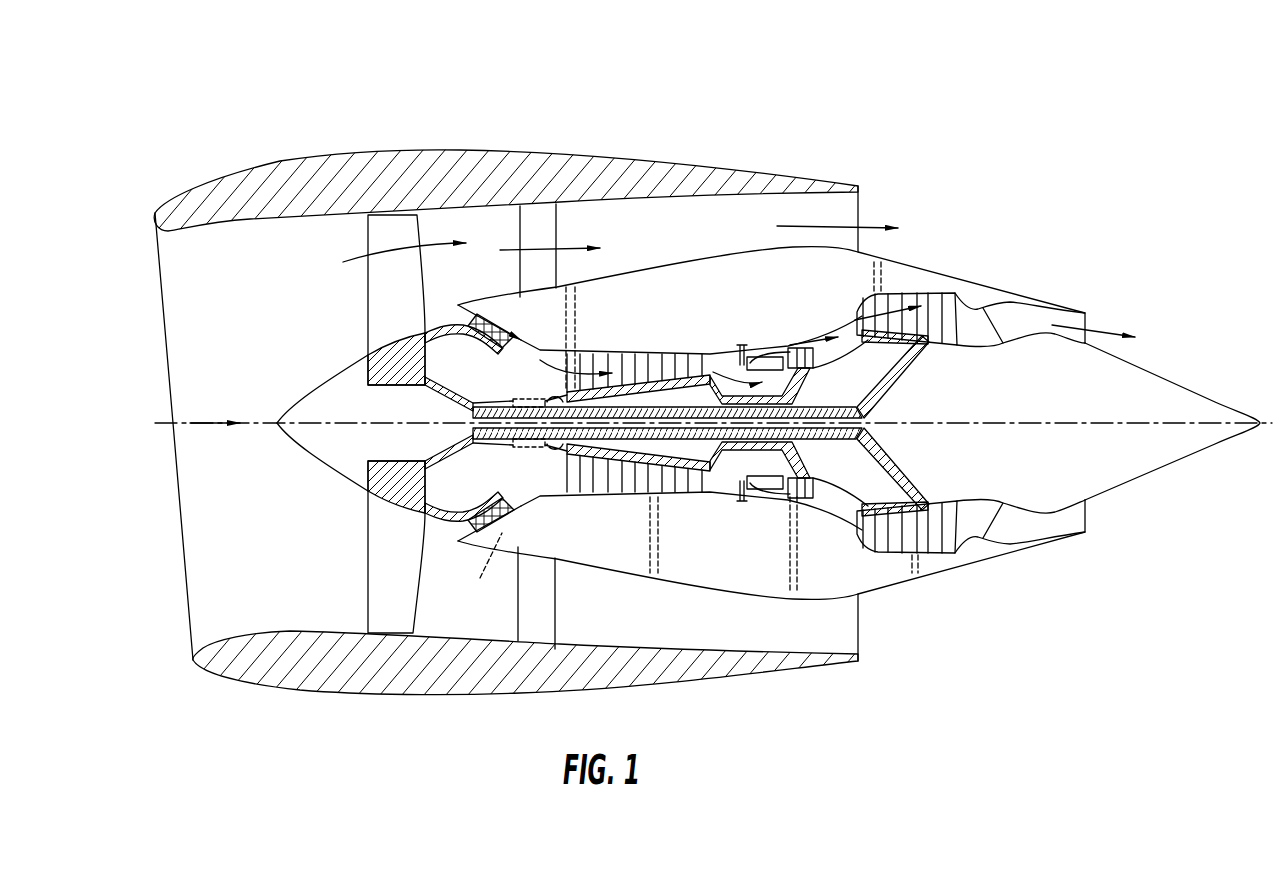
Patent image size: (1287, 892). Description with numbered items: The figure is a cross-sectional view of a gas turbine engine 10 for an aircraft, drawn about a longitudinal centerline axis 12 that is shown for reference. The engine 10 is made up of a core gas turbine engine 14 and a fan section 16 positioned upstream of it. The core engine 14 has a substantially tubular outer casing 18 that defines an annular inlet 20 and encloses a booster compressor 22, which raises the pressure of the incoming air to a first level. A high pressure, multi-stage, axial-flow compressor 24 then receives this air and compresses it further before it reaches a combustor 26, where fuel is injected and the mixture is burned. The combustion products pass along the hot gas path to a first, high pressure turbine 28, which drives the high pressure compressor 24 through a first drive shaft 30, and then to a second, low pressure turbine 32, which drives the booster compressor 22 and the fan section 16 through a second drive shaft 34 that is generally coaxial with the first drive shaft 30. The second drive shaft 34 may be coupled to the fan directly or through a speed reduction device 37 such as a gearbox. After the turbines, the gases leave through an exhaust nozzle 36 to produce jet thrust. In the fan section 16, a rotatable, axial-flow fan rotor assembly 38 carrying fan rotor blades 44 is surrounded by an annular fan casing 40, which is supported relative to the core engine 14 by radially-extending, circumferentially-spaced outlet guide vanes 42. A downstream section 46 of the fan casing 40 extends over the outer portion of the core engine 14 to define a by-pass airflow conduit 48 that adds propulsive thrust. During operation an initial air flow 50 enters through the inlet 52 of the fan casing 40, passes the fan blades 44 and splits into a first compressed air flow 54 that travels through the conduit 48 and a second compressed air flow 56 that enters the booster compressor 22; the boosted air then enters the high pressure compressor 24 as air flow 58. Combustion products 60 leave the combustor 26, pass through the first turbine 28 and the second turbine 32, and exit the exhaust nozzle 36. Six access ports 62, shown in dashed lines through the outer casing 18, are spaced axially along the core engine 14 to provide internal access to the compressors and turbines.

The gas turbine engine 10 is at (998, 169).
The centerline axis 12 is at (1026, 421).
The core gas turbine engine 14 is at (719, 299).
The fan section 16 is at (397, 133).
The outer casing 18 is at (717, 590).
The annular inlet 20 is at (471, 534).
The booster compressor 22 is at (522, 493).
The high pressure compressor 24 is at (588, 480).
The combustor 26 is at (757, 489).
The first (high pressure) turbine 28 is at (820, 490).
The first (high pressure) drive shaft 30 is at (803, 383).
The second (low pressure) turbine 32 is at (940, 550).
The second (low pressure) drive shaft 34 is at (523, 400).
The exhaust nozzle 36 is at (1086, 315).
The speed reduction device 37 is at (533, 456).
The fan rotor assembly 38 is at (426, 386).
The fan casing 40 is at (407, 697).
The outlet guide vanes 42 is at (558, 213).
The fan rotor blades 44 is at (370, 583).
The downstream section of the fan casing 46 is at (765, 170).
The by-pass airflow conduit 48 is at (693, 241).
The initial air flow 50 is at (191, 421).
The inlet 52 is at (183, 637).
The first compressed air flow 54 is at (387, 250).
The second compressed air flow 56 is at (453, 315).
The air flow entering the high pressure compressor 58 is at (591, 360).
The combustion products 60 is at (800, 343).
The access ports 62 is at (590, 297).